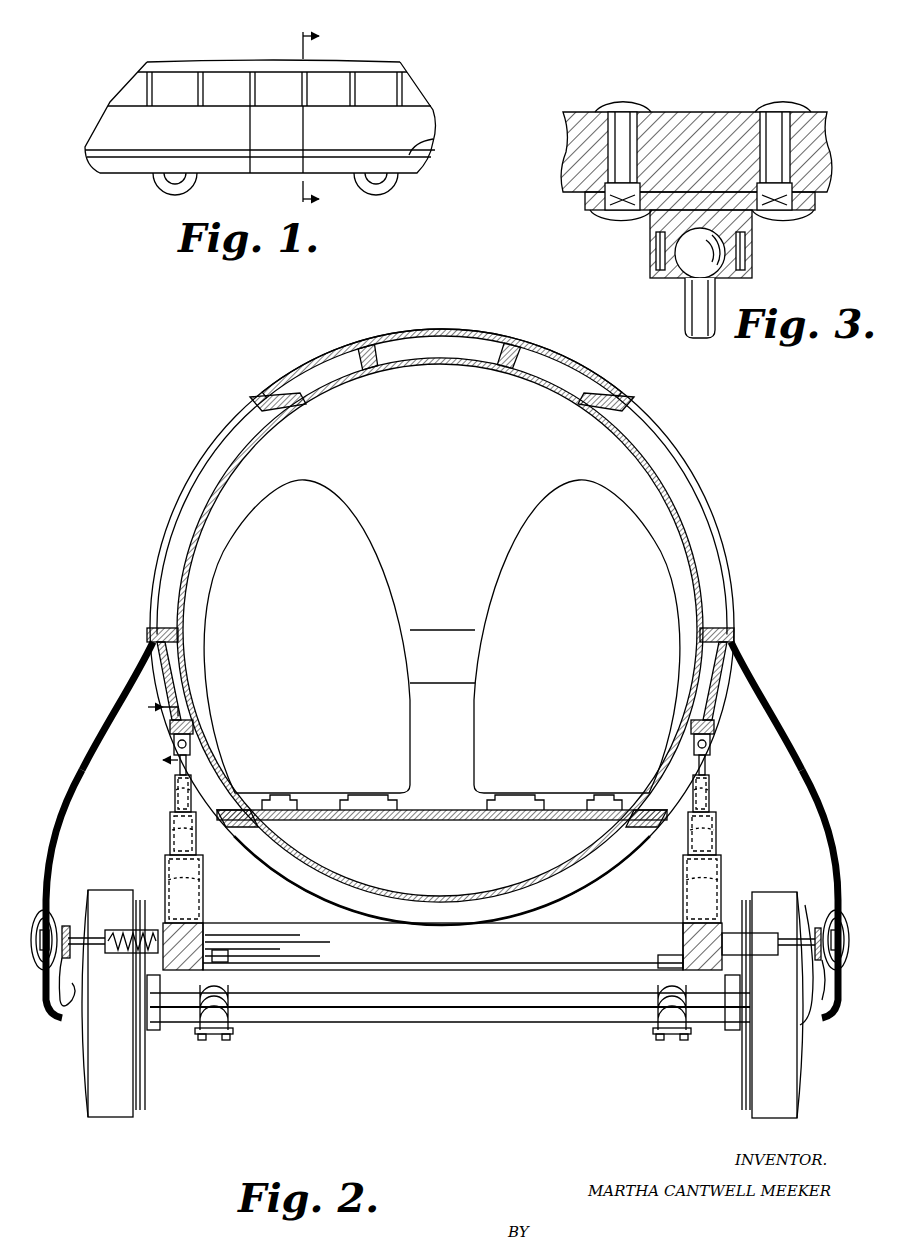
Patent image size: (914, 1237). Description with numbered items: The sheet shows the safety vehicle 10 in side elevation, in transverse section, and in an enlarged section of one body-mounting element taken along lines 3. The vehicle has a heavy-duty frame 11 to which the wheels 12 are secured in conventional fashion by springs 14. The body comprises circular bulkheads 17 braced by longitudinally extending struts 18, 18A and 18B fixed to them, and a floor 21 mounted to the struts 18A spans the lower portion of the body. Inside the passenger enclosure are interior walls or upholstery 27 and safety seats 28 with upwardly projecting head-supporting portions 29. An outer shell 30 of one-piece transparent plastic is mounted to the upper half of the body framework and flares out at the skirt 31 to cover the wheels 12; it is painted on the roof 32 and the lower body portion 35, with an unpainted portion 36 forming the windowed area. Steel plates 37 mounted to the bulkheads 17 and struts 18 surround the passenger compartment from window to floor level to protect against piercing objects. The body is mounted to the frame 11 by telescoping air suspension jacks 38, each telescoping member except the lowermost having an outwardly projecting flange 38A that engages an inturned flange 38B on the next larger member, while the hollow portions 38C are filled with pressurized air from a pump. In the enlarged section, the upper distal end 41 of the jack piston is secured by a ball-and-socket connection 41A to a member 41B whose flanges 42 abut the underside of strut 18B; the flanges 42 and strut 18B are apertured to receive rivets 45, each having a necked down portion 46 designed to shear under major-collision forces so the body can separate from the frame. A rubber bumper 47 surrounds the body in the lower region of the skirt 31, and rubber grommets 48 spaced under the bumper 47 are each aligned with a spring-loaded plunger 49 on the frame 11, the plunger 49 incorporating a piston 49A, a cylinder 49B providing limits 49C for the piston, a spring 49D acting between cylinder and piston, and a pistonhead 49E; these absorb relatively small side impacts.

In FIG. 1, the safety vehicle 10 is at (406, 56).
In FIG. 2, the frame 11 is at (356, 961).
In FIG. 1, the wheels 12 is at (155, 189).
In FIG. 2, the wheels 12 is at (110, 1107).
In FIG. 2, the springs 14 is at (213, 1007).
In FIG. 2, the circular bulkheads 17 is at (383, 902).
In FIG. 2, the strut 18 is at (290, 390).
In FIG. 2, the strut 18A is at (232, 823).
In FIG. 3, the strut 18B is at (698, 112).
In FIG. 2, the strut 18B is at (170, 732).
In FIG. 2, the floor 21 is at (425, 820).
In FIG. 2, the interior walls or upholstery 27 is at (407, 363).
In FIG. 2, the safety seats 28 is at (270, 598).
In FIG. 2, the head-supporting portions 29 is at (320, 487).
In FIG. 1, the outer shell 30 is at (438, 113).
In FIG. 2, the outer shell 30 is at (272, 385).
In FIG. 2, the skirt 31 is at (50, 840).
In FIG. 1, the roof 32 is at (170, 62).
In FIG. 2, the roof 32 is at (428, 332).
In FIG. 1, the lower body portion 35 is at (174, 143).
In FIG. 2, the lower body portion 35 is at (762, 700).
In FIG. 1, the unpainted portion 36 is at (214, 100).
In FIG. 2, the unpainted portion 36 is at (162, 487).
In FIG. 2, the steel plates 37 is at (155, 680).
In FIG. 2, the telescoping air suspension jacks 38 is at (705, 883).
In FIG. 2, the outwardly projecting flange 38A is at (212, 778).
In FIG. 2, the inturned flange 38B is at (173, 776).
In FIG. 2, the hollow portions 38C is at (172, 800).
In FIG. 3, the upper distal end of air jack piston 41 is at (697, 305).
In FIG. 3, the ball-and-socket connection 41A is at (730, 274).
In FIG. 3, the member 41B is at (663, 220).
In FIG. 3, the flanges 42 is at (590, 200).
In FIG. 3, the rivets 45 is at (622, 130).
In FIG. 3, the necked down portion 46 is at (760, 184).
In FIG. 1, the rubber bumper 47 is at (427, 150).
In FIG. 2, the rubber bumper 47 is at (32, 935).
In FIG. 2, the rubber grommets 48 is at (62, 927).
In FIG. 2, the spring-loaded plunger 49 is at (766, 970).
In FIG. 2, the piston 49A is at (72, 983).
In FIG. 2, the cylinder 49B is at (113, 955).
In FIG. 2, the limits 49C is at (157, 927).
In FIG. 2, the spring 49D is at (132, 928).
In FIG. 2, the pistonhead 49E is at (817, 930).
In FIG. 2, the section line 3- 3 is at (154, 733).